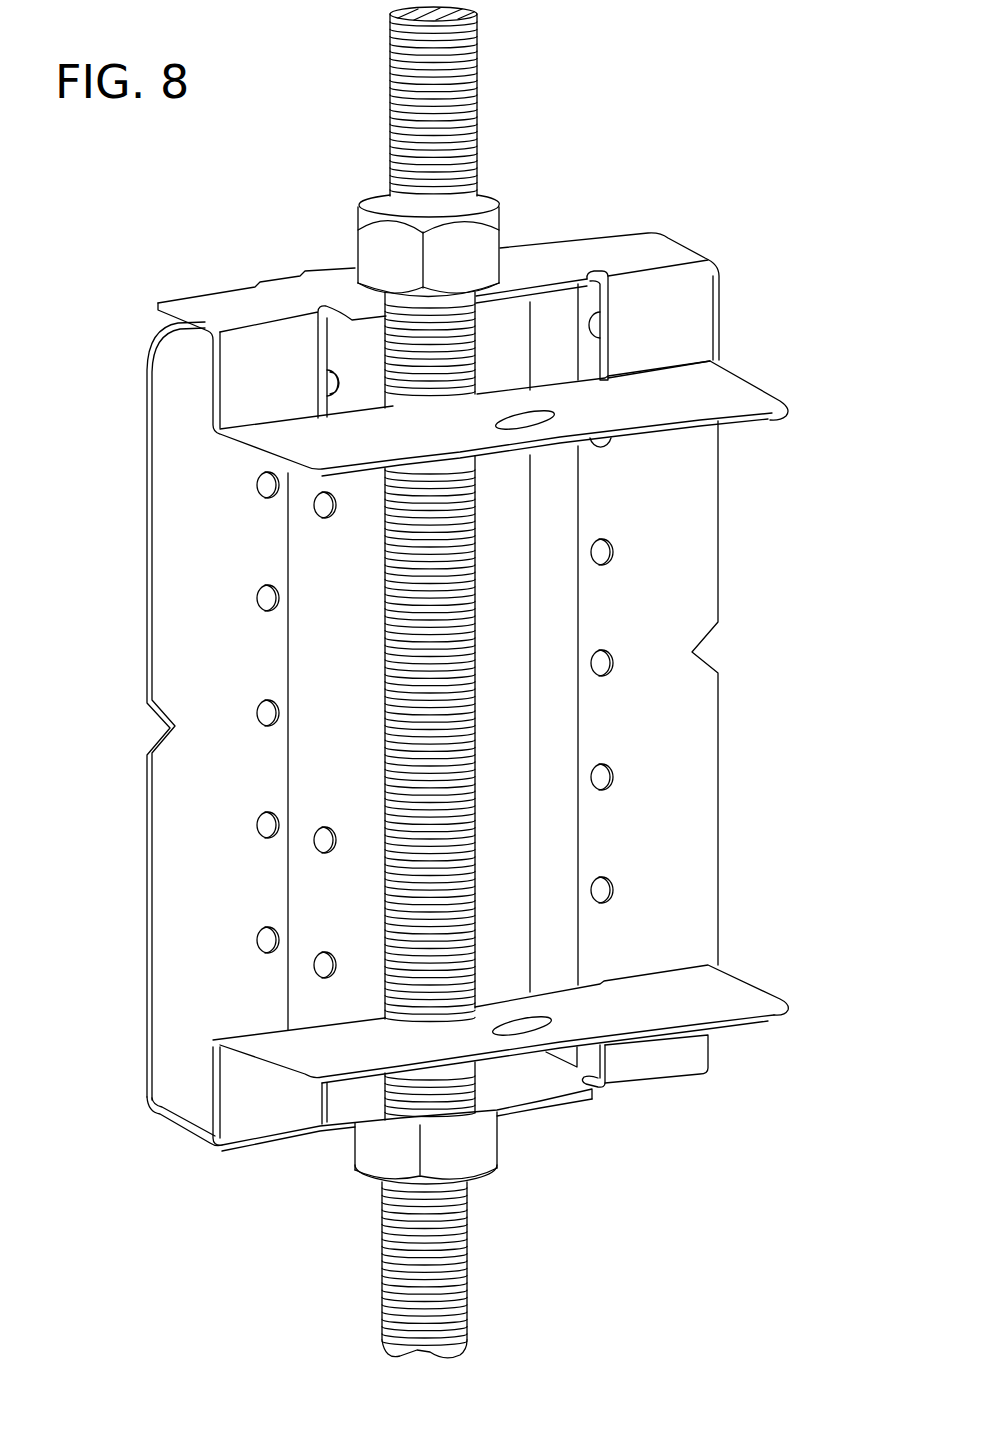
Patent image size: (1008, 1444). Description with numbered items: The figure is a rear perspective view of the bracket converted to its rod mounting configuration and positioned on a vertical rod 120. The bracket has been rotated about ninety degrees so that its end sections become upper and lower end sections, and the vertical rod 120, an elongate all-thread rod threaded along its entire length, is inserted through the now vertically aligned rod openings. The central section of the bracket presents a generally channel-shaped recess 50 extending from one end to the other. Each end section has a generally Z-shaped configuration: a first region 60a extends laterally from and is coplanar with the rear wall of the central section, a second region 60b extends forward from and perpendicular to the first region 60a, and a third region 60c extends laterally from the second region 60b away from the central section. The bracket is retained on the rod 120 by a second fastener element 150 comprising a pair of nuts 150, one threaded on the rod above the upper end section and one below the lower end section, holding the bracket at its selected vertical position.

The channel-shaped recess 50 is at (497, 718).
The first region 60a is at (633, 252).
The second region 60b is at (670, 317).
The third region 60c is at (757, 392).
The vertical rod 120 is at (477, 97).
The second fastener element 150 is at (497, 203).